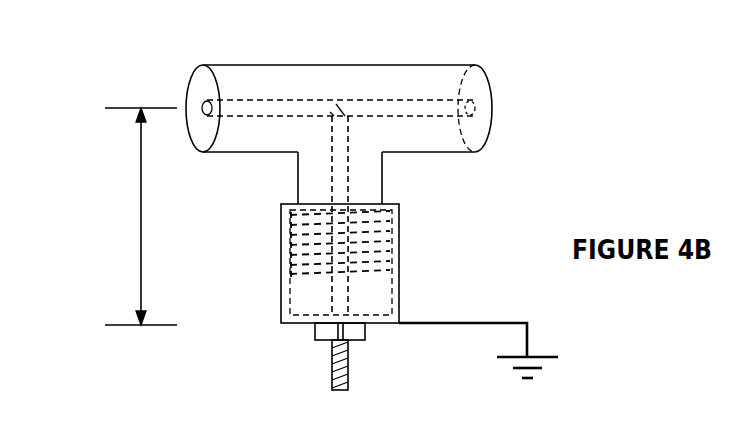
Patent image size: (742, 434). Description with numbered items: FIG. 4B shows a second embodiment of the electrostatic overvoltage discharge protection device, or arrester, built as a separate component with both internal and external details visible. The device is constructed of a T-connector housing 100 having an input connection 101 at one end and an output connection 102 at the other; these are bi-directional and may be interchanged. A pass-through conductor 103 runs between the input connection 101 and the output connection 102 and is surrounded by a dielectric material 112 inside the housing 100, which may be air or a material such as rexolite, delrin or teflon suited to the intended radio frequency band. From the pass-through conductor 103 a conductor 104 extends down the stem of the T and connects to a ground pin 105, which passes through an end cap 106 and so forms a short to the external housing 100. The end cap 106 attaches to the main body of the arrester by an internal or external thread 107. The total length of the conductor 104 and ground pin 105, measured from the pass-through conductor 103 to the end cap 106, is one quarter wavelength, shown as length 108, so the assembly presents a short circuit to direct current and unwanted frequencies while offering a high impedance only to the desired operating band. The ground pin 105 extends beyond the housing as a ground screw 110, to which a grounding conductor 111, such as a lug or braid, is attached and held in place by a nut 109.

The T-connector housing 100 is at (447, 65).
The input connection 101 is at (202, 107).
The output connection 102 is at (478, 108).
The pass-through conductor 103 is at (285, 118).
The conductor 104 is at (347, 172).
The ground pin 105 is at (348, 295).
The end cap 106 is at (281, 285).
The thread 107 is at (392, 248).
The length 108 is at (141, 252).
The nut 109 is at (313, 340).
The ground screw 110 is at (350, 376).
The grounding conductor 111 is at (505, 322).
The dielectric material 112 is at (290, 85).